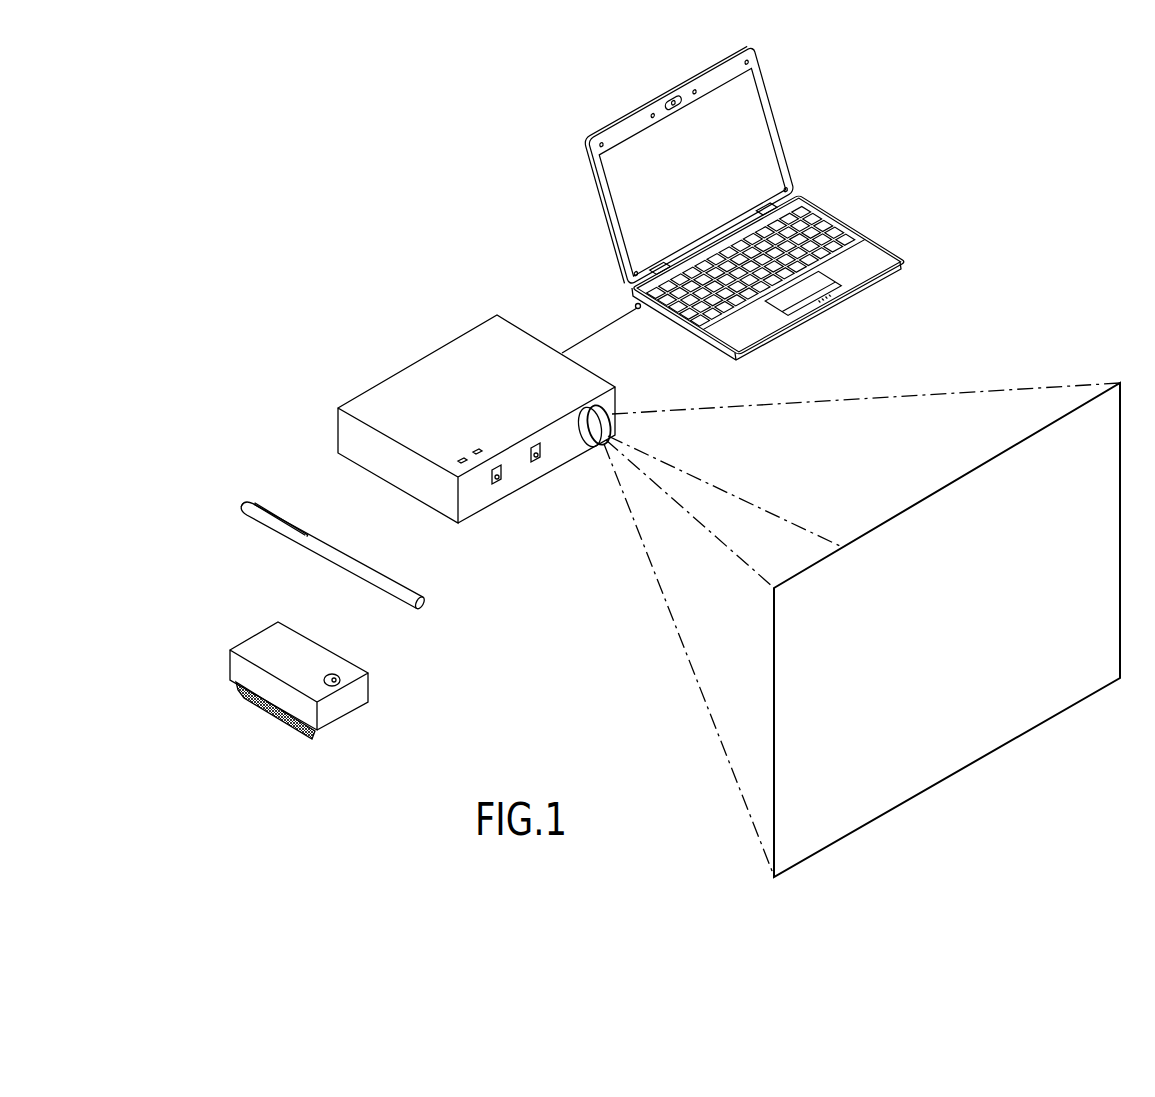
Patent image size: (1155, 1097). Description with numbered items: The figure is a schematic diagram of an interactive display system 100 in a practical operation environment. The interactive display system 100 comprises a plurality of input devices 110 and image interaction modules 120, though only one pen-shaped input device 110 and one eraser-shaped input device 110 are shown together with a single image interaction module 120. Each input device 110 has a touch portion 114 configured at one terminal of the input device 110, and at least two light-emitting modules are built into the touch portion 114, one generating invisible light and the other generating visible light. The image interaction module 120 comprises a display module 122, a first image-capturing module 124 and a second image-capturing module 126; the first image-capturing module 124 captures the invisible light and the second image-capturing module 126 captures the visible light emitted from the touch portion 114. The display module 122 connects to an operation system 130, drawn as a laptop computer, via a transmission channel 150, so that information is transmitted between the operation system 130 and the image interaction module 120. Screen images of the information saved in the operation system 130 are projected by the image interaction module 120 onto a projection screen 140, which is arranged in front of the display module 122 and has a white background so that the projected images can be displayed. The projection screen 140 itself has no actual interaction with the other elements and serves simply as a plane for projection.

The interactive display system 100 is at (268, 256).
The input device 110 is at (289, 537).
The touch portion 114 is at (424, 606).
The image interaction module 120 is at (416, 363).
The display module 122 is at (604, 424).
The first image-capturing module 124 is at (538, 464).
The second image-capturing module 126 is at (503, 488).
The operation system 130 is at (775, 118).
The projection screen 140 is at (1015, 740).
The transmission channel 150 is at (587, 338).